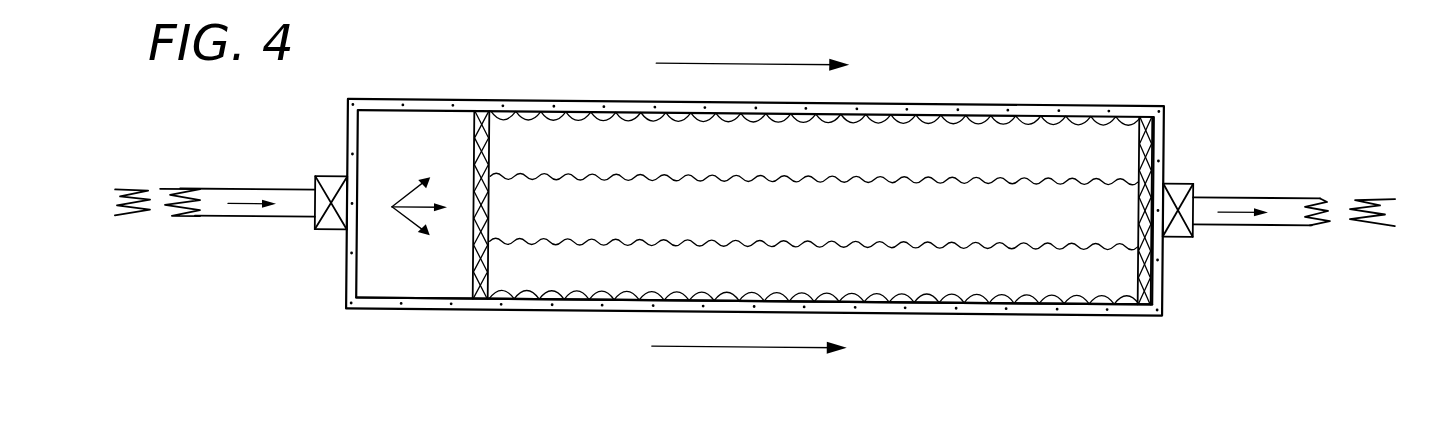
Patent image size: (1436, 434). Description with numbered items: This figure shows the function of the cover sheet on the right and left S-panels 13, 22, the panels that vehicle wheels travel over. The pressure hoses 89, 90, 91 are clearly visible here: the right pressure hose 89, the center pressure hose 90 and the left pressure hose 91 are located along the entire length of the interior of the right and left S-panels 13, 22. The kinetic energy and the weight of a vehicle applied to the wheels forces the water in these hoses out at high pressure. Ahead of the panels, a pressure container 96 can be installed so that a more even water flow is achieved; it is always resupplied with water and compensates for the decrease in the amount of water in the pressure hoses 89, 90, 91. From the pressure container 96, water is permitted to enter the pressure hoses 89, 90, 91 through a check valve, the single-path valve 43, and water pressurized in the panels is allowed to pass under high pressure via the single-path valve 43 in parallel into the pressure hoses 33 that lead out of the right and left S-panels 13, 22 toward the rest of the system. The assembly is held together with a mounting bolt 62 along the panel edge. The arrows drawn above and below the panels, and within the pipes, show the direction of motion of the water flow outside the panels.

The right S-panel 13 is at (575, 100).
The left S-panel 22 is at (755, 207).
The pressure hoses 33 is at (265, 216).
The single-path valve 43 is at (328, 172).
The mounting bolt 62 is at (550, 308).
The right pressure hose 89 is at (932, 145).
The center pressure hose 90 is at (1043, 224).
The left pressure hose 91 is at (968, 267).
The pressure container 96 is at (418, 140).